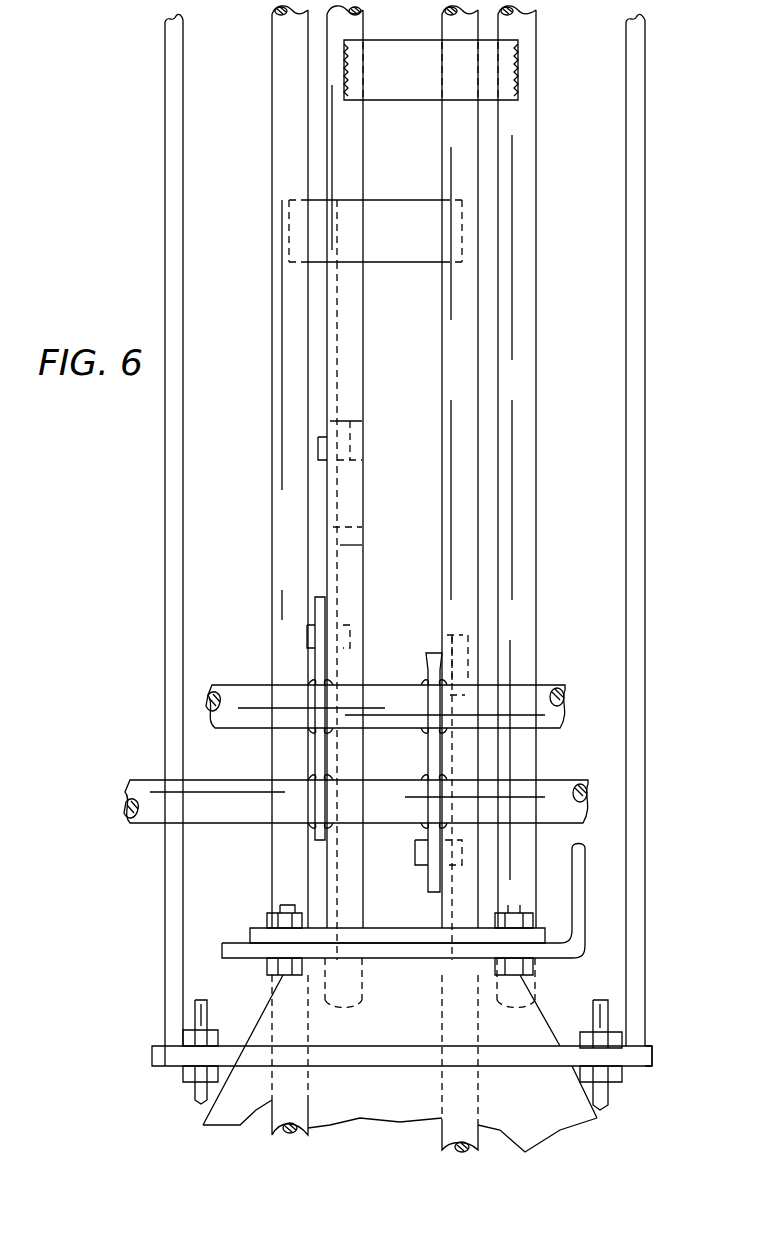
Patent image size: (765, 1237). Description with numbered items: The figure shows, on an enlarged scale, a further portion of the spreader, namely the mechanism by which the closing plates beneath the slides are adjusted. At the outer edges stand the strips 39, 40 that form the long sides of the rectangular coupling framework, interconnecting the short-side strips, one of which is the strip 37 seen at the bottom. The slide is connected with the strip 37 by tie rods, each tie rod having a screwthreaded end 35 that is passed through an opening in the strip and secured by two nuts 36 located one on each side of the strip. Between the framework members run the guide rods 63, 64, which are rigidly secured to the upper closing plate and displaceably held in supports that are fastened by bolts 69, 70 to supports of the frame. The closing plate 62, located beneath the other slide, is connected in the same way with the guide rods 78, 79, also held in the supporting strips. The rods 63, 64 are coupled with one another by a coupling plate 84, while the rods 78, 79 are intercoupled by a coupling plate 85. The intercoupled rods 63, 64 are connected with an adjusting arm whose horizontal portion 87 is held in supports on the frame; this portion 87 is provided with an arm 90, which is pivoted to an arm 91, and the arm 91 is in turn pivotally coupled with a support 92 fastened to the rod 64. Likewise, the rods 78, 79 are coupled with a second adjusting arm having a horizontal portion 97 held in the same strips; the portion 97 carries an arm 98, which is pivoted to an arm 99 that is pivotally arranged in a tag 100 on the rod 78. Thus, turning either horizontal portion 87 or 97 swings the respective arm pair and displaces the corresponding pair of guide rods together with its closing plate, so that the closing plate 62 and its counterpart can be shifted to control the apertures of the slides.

The screwthreaded end 35 is at (230, 986).
The nut 36 is at (214, 1036).
The strip 37 is at (405, 1036).
The strip 39 is at (640, 275).
The strip 40 is at (165, 468).
The closing plate 62 is at (232, 1112).
The guide rod 63 is at (281, 491).
The guide rod 64 is at (462, 350).
The bolt 69 is at (276, 906).
The bolt 70 is at (510, 908).
The guide rod 78 is at (355, 554).
The guide rod 79 is at (530, 351).
The coupling plate 84 is at (425, 258).
The coupling plate 85 is at (421, 82).
The horizontal portion 87 is at (240, 660).
The arm 90 is at (430, 752).
The arm 91 is at (445, 641).
The support 92 is at (460, 641).
The horizontal portion 97 is at (135, 780).
The arm 98 is at (320, 605).
The arm 99 is at (370, 522).
The tag 100 is at (398, 406).